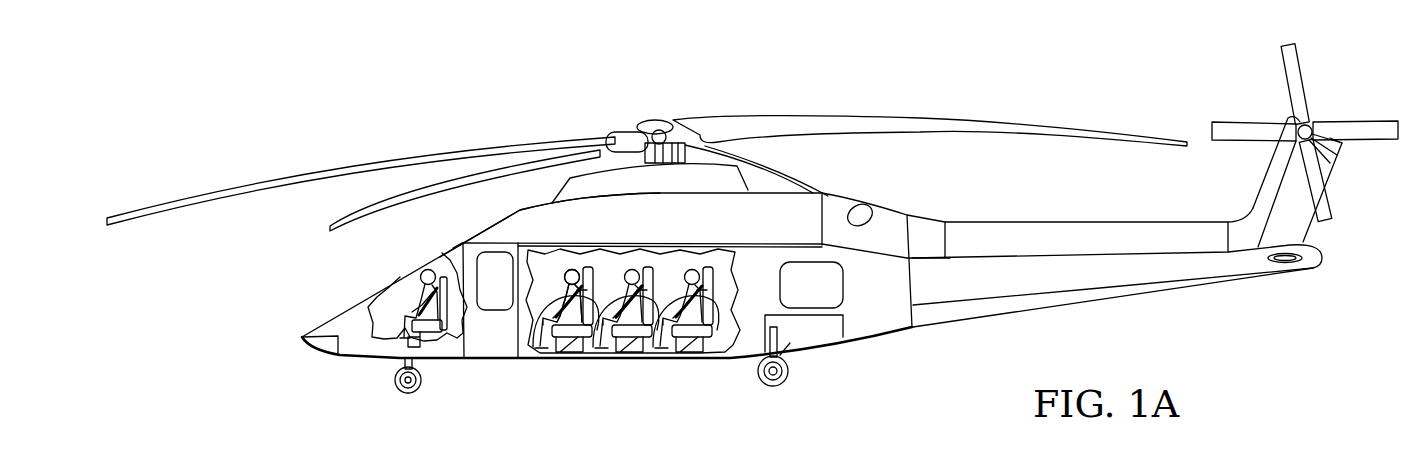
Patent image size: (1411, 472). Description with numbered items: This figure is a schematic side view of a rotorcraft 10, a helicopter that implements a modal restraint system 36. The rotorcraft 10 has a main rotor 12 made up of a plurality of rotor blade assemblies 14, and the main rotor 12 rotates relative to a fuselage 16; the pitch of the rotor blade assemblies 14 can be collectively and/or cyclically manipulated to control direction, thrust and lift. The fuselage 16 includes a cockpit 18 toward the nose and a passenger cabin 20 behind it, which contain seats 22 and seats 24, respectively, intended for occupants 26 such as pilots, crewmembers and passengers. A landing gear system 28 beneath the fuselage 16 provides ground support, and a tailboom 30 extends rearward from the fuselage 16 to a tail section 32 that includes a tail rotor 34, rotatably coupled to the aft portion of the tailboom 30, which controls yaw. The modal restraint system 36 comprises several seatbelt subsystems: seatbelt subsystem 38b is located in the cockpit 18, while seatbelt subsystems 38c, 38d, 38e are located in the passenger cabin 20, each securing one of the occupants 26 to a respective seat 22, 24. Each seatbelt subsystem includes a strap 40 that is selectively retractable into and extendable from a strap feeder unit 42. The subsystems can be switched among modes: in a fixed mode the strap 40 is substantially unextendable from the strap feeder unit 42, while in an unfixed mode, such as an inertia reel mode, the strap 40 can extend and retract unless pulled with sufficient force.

The rotorcraft 10 is at (410, 97).
The main rotor 12 is at (650, 120).
The rotor blade assemblies 14 is at (980, 121).
The fuselage 16 is at (317, 353).
The cockpit 18 is at (388, 345).
The passenger cabin 20 is at (542, 257).
The seat 22 is at (462, 333).
The seat 24 is at (720, 353).
The occupants 26 is at (634, 257).
The landing gear system 28 is at (789, 372).
The tailboom 30 is at (1065, 307).
The tail section 32 is at (1283, 111).
The tail rotor 34 is at (1313, 124).
The modal restraint system 36 is at (417, 303).
The seatbelt subsystem 38b is at (423, 283).
The seatbelt subsystem 38c is at (538, 347).
The seatbelt subsystem 38d is at (598, 347).
The seatbelt subsystem 38e is at (658, 347).
The strap 40 is at (571, 268).
The strap feeder unit 42 is at (616, 290).